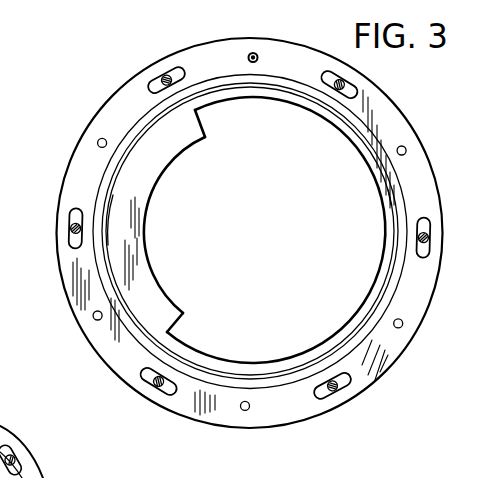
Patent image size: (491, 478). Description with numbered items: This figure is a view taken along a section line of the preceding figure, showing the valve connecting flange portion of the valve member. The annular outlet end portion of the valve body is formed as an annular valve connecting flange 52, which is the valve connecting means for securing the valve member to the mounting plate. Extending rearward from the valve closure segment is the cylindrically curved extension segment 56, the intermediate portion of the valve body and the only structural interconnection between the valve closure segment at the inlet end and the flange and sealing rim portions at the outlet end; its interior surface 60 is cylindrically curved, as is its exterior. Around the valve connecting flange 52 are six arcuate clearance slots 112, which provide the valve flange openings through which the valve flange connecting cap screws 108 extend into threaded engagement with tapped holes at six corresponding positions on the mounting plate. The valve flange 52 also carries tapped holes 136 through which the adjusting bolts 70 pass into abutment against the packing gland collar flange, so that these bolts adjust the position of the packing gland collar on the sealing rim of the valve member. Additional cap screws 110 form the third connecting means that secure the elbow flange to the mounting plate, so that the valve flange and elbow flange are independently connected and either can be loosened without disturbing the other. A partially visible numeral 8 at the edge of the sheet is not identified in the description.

The annular valve connecting flange 52 is at (62, 181).
The cylindrically curved extension segment 56 is at (166, 171).
The interior surface of the extension segment 60 is at (148, 218).
The adjusting bolts 70 is at (250, 55).
The tapped holes 136 is at (258, 56).
The cap screws 108 is at (341, 386).
The arcuate clearance slots 112 is at (329, 392).
The additional cap screws 110 is at (0, 416).
The partial reference 8 is at (6, 374).